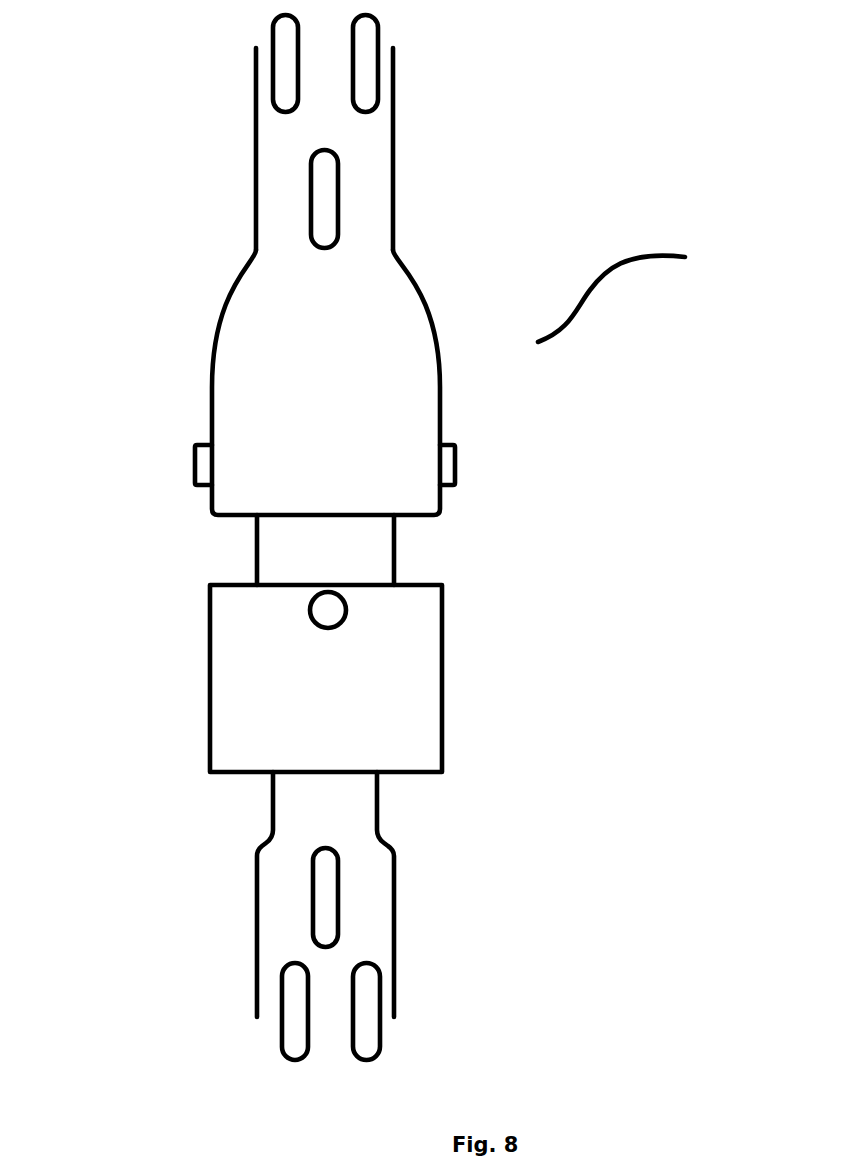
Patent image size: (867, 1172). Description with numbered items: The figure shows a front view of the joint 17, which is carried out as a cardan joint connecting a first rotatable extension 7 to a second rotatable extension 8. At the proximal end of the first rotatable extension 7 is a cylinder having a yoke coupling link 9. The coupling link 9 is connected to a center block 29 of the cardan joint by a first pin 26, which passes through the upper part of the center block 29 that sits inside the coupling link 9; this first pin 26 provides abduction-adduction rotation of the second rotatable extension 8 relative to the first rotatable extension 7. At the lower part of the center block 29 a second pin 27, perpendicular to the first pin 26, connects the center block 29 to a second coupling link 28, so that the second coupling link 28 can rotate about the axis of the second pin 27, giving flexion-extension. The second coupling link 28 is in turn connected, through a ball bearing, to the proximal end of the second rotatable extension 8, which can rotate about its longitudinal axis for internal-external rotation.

The first rotatable extension 7 is at (353, 300).
The second rotatable extension 8 is at (375, 912).
The coupling link 9 is at (268, 387).
The joint 17 is at (655, 283).
The first pin 26 is at (457, 457).
The second pin 27 is at (330, 609).
The second coupling link 28 is at (423, 710).
The center block 29 is at (270, 552).